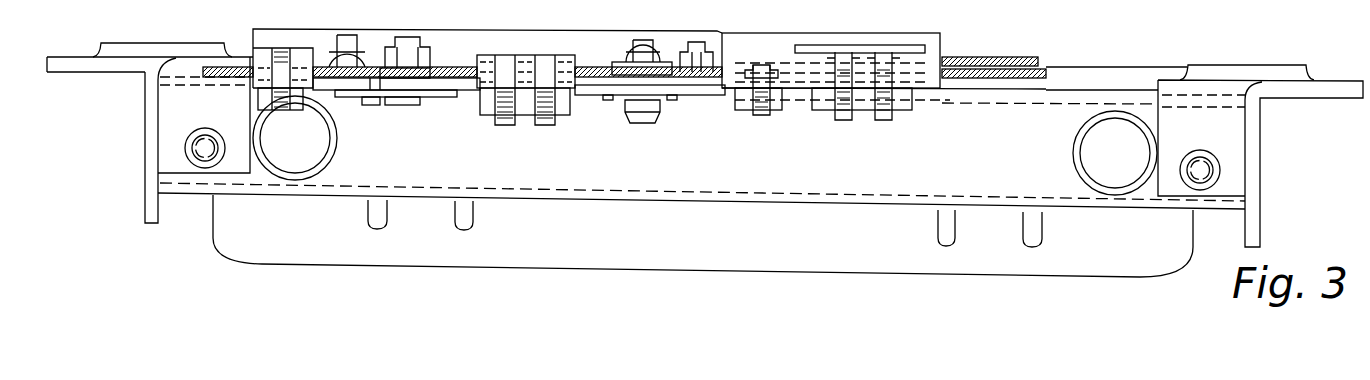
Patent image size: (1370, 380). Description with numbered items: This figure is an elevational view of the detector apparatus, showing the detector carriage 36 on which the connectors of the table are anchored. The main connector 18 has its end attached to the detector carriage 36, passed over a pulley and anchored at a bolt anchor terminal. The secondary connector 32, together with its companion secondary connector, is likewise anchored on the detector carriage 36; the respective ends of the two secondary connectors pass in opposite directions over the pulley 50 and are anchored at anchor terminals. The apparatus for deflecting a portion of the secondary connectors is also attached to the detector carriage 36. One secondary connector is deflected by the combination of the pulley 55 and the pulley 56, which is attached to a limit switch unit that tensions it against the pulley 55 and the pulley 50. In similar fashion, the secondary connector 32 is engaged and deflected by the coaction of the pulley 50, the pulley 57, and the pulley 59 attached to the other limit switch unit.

The pulley 55 is at (266, 64).
The pulley 56 is at (421, 72).
The pulley 50 is at (480, 55).
The pulley 59 is at (648, 40).
The pulley 57 is at (785, 60).
The detector carriage 36 is at (927, 33).
The main connector 18 is at (999, 56).
The secondary connector 32 is at (1012, 82).